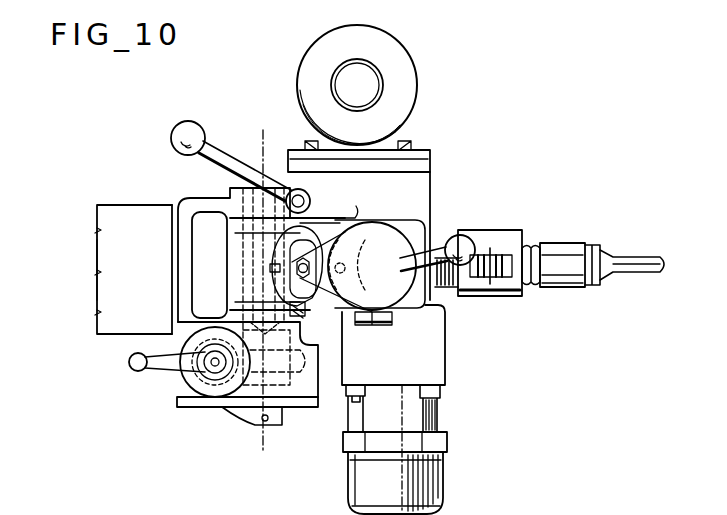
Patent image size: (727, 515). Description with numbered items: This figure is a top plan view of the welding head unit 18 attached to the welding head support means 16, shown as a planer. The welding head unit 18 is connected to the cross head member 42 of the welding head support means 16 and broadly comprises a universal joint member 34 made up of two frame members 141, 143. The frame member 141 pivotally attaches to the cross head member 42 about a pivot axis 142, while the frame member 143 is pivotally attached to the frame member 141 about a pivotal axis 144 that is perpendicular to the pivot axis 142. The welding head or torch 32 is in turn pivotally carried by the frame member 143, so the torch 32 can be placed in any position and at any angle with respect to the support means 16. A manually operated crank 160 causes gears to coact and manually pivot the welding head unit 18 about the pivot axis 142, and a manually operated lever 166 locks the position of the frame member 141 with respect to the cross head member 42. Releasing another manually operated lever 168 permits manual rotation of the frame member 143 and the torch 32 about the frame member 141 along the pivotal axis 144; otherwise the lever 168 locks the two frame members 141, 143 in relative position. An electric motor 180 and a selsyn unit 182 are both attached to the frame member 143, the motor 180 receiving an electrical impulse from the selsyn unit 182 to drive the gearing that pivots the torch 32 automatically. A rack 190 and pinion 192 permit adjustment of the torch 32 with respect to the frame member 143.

The welding head support means 16 is at (95, 282).
The welding head unit 18 is at (296, 56).
The welding head or torch 32 is at (636, 258).
The universal joint member 34 is at (428, 150).
The cross head member 42 is at (109, 207).
The frame member 141 is at (232, 256).
The pivot axis 142 is at (261, 146).
The frame member 143 is at (432, 345).
The pivotal axis 144 is at (366, 269).
The manually operated crank 160 is at (166, 370).
The manually operated lever 166 is at (188, 121).
The manually operated lever 168 is at (448, 236).
The electric motor 180 is at (398, 70).
The selsyn unit 182 is at (376, 483).
The rack 190 is at (543, 244).
The pinion 192 is at (478, 248).